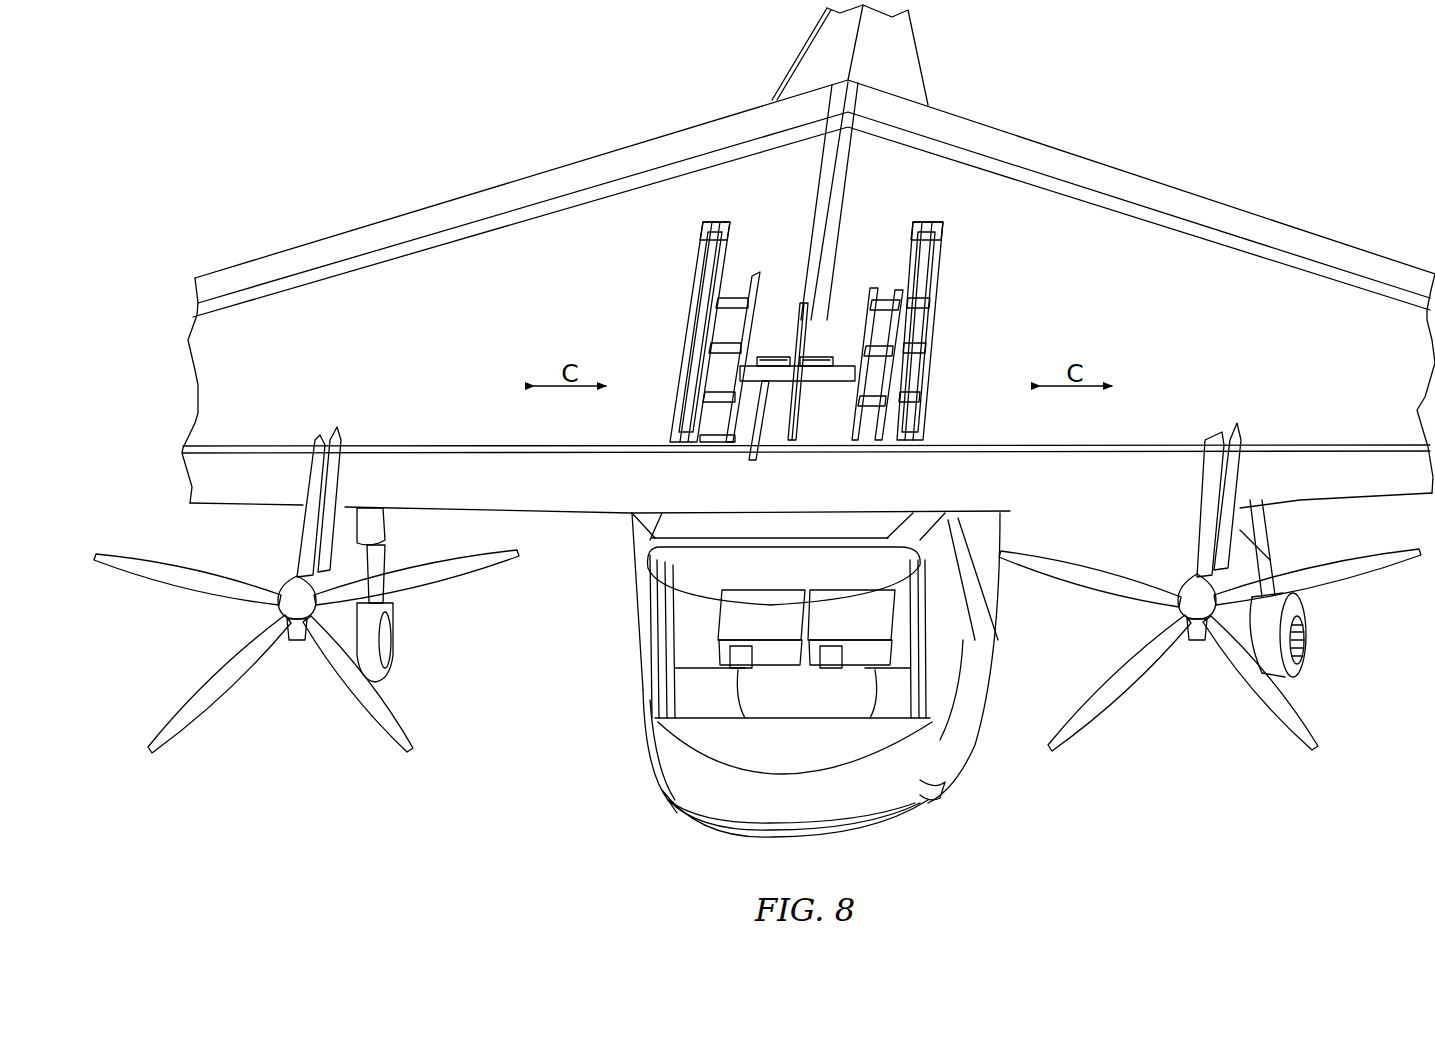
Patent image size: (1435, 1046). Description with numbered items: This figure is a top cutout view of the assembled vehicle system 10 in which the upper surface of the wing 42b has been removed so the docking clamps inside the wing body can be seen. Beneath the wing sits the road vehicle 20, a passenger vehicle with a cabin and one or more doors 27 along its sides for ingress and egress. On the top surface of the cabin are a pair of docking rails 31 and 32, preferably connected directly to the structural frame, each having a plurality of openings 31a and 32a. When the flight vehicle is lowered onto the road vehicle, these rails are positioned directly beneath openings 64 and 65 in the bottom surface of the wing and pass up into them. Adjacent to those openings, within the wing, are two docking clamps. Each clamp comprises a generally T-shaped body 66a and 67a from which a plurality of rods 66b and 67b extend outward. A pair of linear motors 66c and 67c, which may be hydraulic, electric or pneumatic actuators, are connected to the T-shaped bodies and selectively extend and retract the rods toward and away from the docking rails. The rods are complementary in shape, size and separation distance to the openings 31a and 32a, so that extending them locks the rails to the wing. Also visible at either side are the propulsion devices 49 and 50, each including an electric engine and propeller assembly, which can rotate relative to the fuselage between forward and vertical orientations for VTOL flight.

The system 10 is at (372, 135).
The road vehicle 20 is at (598, 714).
The doors 27 is at (813, 806).
The docking rail 31 is at (928, 223).
The openings 31a is at (926, 302).
The docking rail 32 is at (734, 226).
The openings 32a is at (702, 396).
The wing 42b is at (804, 185).
The propulsion device 49 is at (297, 674).
The propulsion device 50 is at (1203, 655).
The opening 64 is at (946, 226).
The opening 65 is at (704, 222).
The T-shaped body 66a is at (866, 300).
The rods 66b is at (902, 304).
The linear motor 66c is at (822, 402).
The T-shaped body 67a is at (726, 436).
The rods 67b is at (754, 296).
The linear motor 67c is at (766, 396).